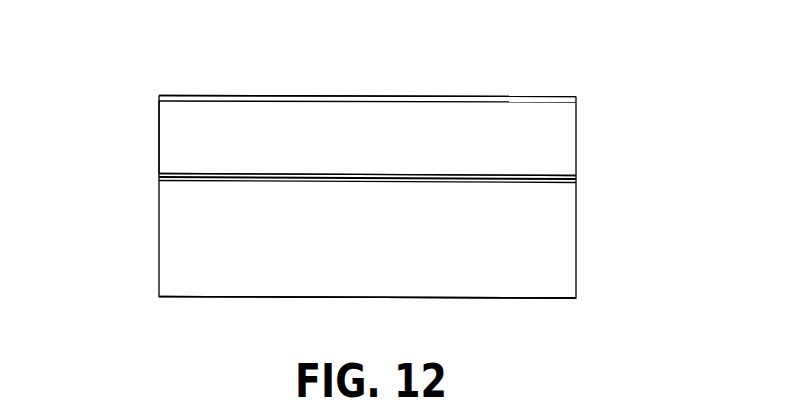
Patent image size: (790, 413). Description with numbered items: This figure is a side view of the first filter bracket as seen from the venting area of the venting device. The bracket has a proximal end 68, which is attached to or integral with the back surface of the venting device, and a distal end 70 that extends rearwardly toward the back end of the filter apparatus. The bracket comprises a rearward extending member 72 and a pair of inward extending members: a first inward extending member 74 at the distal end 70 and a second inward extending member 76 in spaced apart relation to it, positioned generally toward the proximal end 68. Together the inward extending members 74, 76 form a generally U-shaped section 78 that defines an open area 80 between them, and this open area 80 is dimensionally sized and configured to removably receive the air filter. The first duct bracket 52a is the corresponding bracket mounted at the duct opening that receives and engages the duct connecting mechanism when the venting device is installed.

The first duct bracket 52a is at (590, 115).
The distal end 70 is at (148, 96).
The first inward extending member 74 is at (302, 100).
The second inward extending member 76 is at (410, 177).
The U-shaped section 78 is at (523, 127).
The open area 80 is at (193, 137).
The proximal end 68 is at (140, 296).
The rearward extending member 72 is at (540, 278).